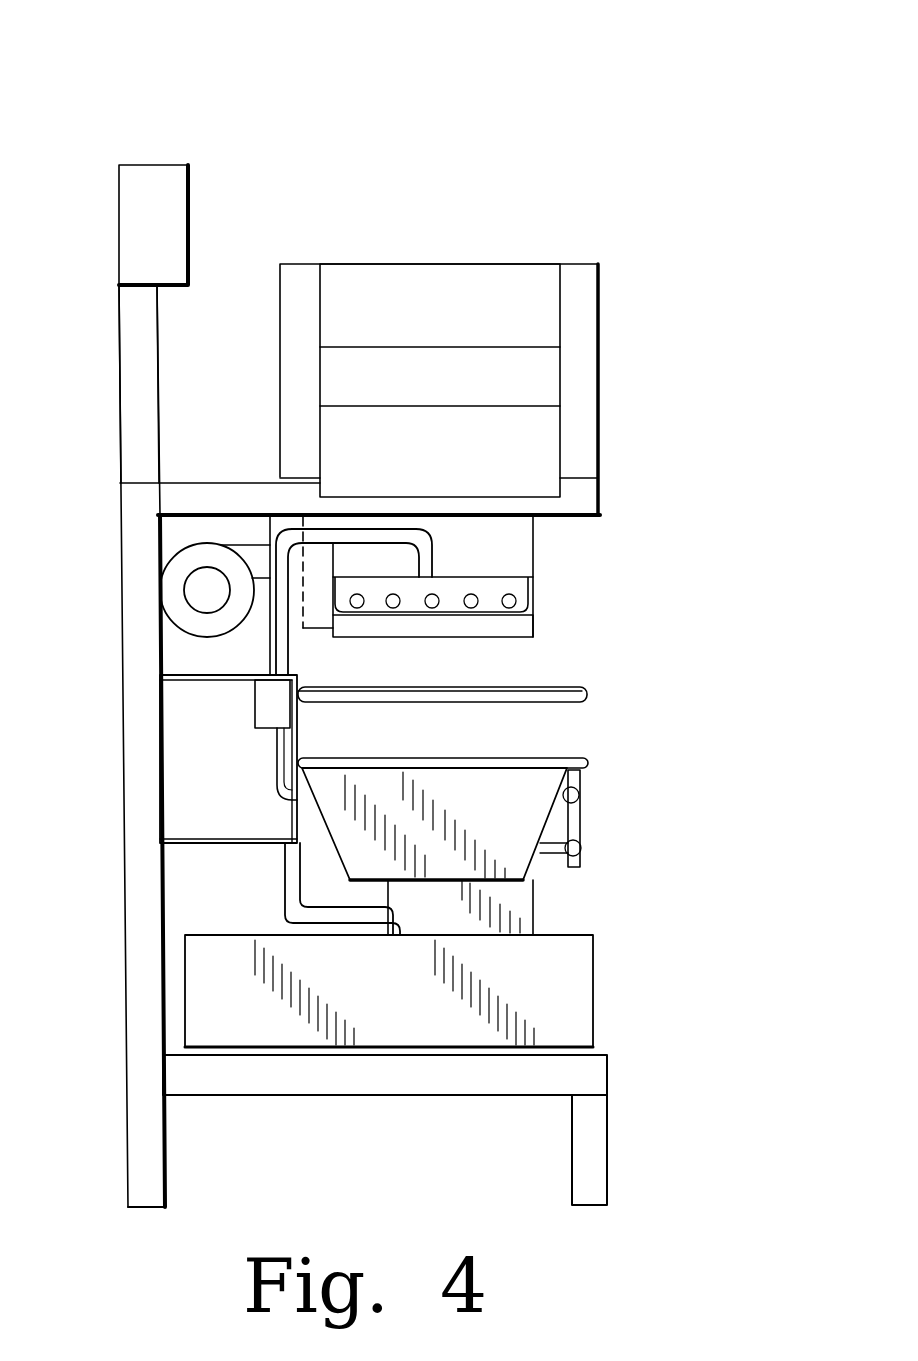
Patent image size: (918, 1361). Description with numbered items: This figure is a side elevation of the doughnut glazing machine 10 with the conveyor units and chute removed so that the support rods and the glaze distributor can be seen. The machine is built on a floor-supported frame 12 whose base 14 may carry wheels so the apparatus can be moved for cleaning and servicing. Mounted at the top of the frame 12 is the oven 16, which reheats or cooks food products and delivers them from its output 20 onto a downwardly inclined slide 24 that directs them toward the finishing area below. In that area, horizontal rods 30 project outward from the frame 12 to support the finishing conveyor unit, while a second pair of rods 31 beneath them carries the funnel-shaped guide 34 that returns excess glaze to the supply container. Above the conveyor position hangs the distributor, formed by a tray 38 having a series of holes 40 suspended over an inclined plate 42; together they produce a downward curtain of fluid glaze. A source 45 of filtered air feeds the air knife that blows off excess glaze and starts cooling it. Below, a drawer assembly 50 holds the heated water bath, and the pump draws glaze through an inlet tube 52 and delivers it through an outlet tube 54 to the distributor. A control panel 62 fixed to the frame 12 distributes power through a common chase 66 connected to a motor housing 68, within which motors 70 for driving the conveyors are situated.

The doughnut glazing machine 10 is at (674, 94).
The frame 12 is at (130, 781).
The base 14 is at (138, 1147).
The oven 16 is at (477, 356).
The output 20 is at (473, 360).
The downwardly inclined slide 24 is at (550, 458).
The horizontal rods 30 is at (590, 693).
The second pair of rods 31 is at (588, 765).
The funnel-shaped guide 34 is at (545, 808).
The tray 38 is at (503, 582).
The holes 40 is at (515, 600).
The inclined plate 42 is at (522, 632).
The source of filtered air 45 is at (185, 590).
The drawer assembly 50 is at (575, 987).
The inlet tube 52 is at (400, 920).
The outlet tube 54 is at (430, 550).
The control panel 62 is at (127, 211).
The common chase 66 is at (127, 408).
The motor housing 68 is at (169, 760).
The motors 70 is at (262, 710).